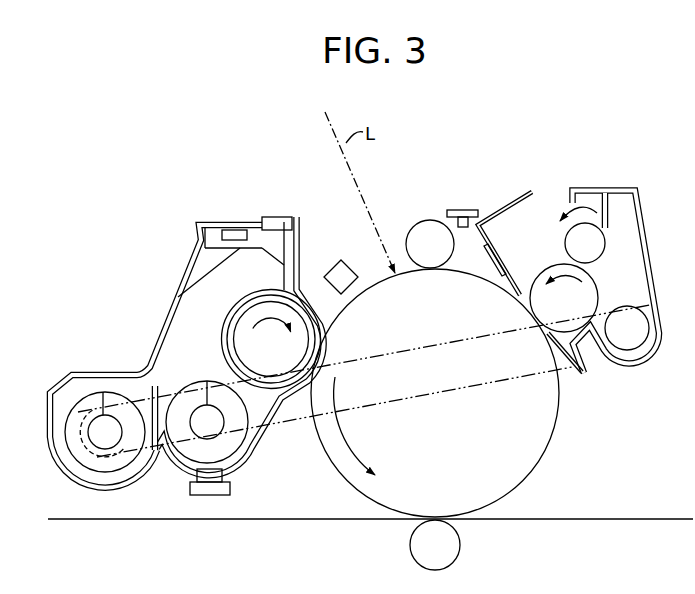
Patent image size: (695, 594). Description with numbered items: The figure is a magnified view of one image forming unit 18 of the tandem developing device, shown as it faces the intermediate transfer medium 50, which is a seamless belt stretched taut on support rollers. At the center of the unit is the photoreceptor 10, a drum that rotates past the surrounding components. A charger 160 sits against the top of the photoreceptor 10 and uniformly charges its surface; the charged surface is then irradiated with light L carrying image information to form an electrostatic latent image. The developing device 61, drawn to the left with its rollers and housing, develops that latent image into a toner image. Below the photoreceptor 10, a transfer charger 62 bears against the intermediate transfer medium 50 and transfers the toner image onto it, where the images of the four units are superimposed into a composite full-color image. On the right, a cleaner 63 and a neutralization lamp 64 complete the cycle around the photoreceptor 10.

The photoreceptor 10 is at (535, 472).
The image forming unit 18 is at (538, 137).
The intermediate transfer medium 50 is at (633, 518).
The developing device 61 is at (181, 277).
The transfer charger 62 is at (460, 545).
The cleaner 63 is at (626, 187).
The neutralization lamp 64 is at (463, 210).
The charger 160 is at (428, 220).